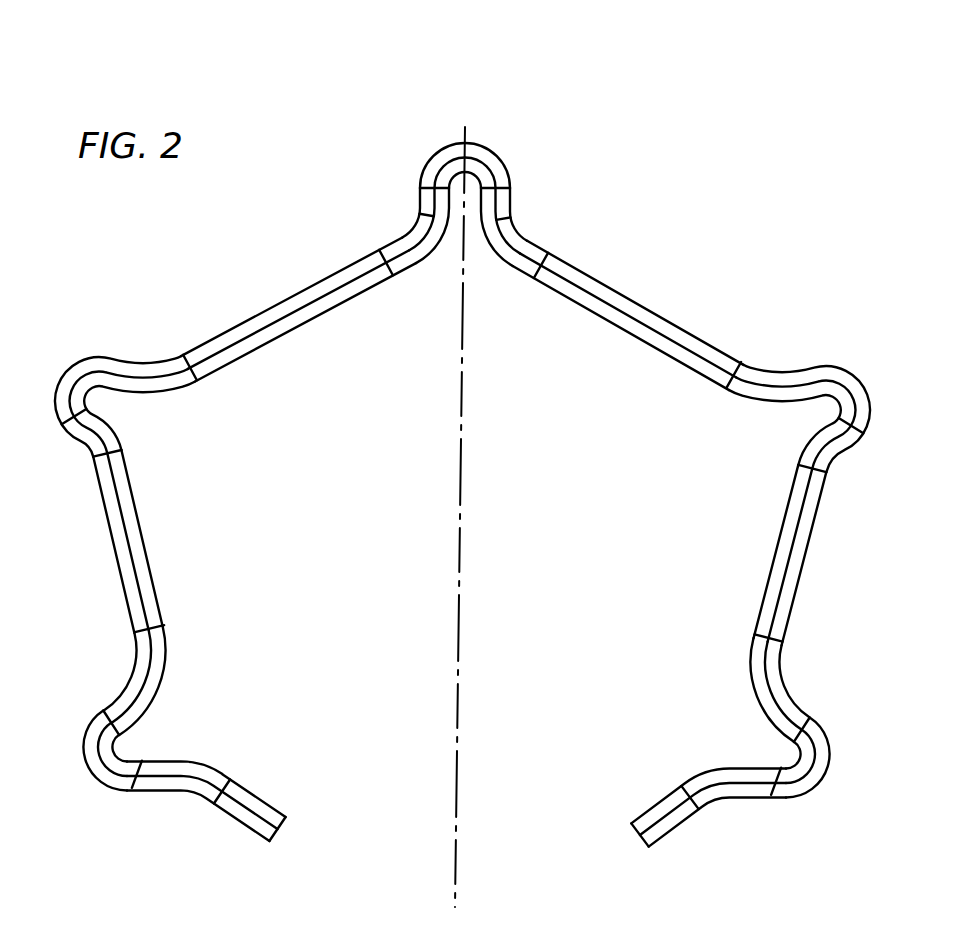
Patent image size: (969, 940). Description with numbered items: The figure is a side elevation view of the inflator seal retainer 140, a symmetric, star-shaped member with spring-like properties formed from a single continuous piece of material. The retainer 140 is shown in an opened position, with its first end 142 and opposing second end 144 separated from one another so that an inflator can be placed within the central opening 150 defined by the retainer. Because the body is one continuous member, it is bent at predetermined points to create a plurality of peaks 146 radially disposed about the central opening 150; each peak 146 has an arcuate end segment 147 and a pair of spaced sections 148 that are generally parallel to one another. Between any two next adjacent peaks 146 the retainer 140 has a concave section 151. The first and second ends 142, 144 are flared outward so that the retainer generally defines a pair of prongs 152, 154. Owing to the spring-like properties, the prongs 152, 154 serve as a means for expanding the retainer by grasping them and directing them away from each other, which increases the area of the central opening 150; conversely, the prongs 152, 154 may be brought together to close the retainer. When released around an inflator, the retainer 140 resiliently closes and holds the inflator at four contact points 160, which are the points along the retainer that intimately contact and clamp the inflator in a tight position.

The inflator seal retainer 140 is at (463, 80).
The first end 142 is at (280, 834).
The second end 144 is at (632, 824).
The peaks 146 is at (487, 145).
The arcuate end segment 147 is at (452, 147).
The spaced sections 148 is at (417, 213).
The central opening 150 is at (417, 562).
The concave section 151 is at (786, 584).
The prong 152 is at (232, 814).
The prong 154 is at (667, 798).
The contact points 160 is at (289, 333).